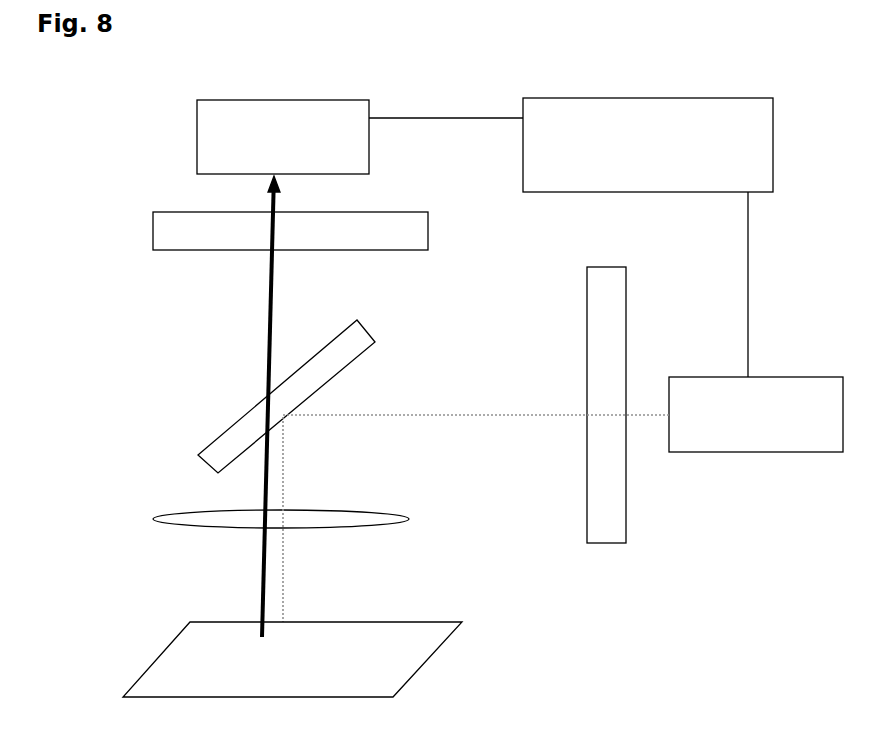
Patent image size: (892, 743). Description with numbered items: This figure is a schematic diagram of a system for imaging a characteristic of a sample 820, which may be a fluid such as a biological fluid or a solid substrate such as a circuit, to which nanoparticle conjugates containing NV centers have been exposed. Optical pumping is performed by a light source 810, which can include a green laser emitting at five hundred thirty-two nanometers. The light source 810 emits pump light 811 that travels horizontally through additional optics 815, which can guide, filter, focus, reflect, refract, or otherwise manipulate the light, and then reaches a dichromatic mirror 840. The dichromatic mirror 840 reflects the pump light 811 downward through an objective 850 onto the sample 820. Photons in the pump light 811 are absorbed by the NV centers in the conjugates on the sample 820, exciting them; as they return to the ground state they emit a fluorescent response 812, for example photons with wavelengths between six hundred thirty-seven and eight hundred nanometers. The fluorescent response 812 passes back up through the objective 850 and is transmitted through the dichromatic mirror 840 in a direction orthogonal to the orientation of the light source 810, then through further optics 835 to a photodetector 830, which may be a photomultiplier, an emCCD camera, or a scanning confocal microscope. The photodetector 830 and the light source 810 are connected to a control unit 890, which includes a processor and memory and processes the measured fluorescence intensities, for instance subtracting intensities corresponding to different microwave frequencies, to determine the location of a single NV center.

The photodetector 830 is at (283, 137).
The control unit 890 is at (571, 237).
The light source 810 is at (756, 414).
The optics 835 is at (153, 232).
The optics 815 is at (615, 508).
The dichromatic mirror 840 is at (220, 435).
The objective 850 is at (200, 528).
The pump light 811 is at (475, 415).
The fluorescent response 812 is at (270, 286).
The sample 820 is at (292, 659).